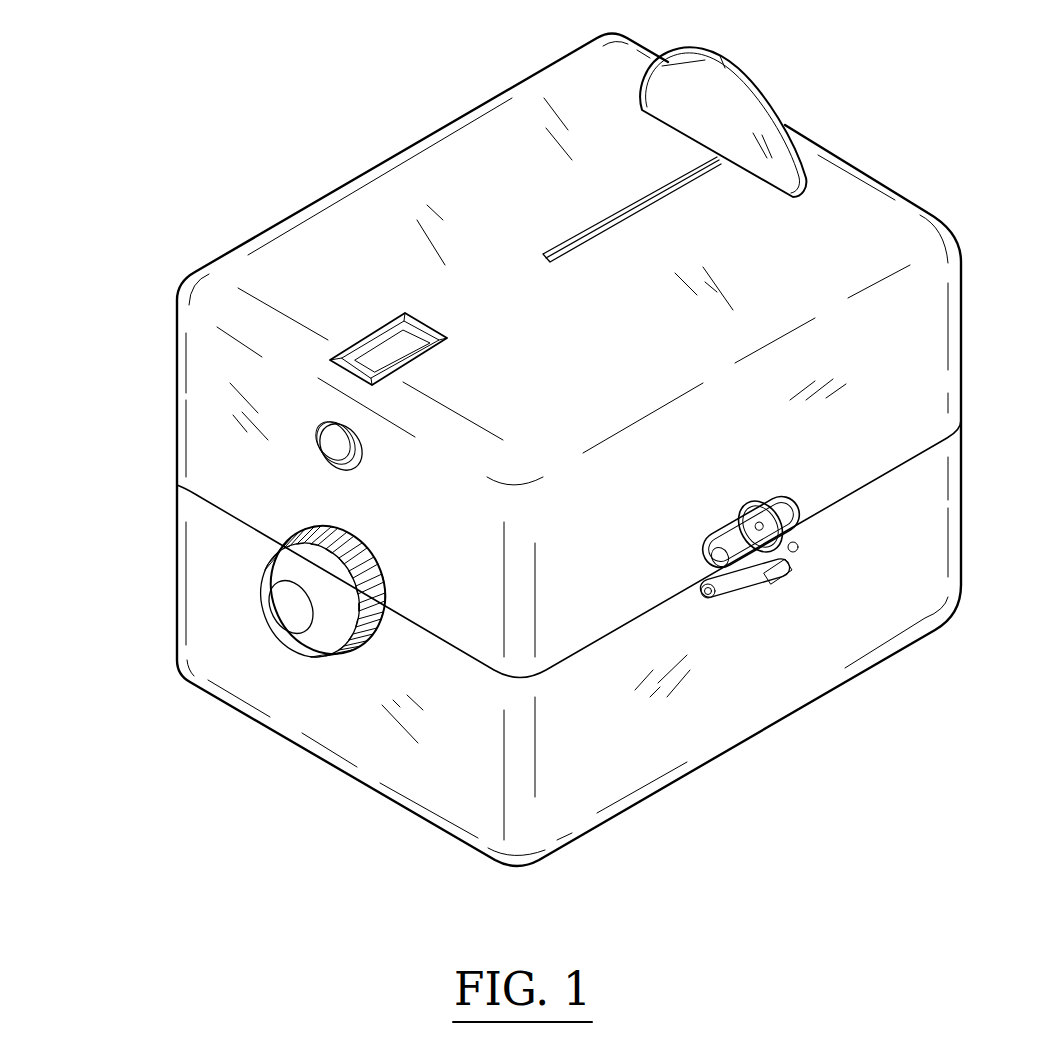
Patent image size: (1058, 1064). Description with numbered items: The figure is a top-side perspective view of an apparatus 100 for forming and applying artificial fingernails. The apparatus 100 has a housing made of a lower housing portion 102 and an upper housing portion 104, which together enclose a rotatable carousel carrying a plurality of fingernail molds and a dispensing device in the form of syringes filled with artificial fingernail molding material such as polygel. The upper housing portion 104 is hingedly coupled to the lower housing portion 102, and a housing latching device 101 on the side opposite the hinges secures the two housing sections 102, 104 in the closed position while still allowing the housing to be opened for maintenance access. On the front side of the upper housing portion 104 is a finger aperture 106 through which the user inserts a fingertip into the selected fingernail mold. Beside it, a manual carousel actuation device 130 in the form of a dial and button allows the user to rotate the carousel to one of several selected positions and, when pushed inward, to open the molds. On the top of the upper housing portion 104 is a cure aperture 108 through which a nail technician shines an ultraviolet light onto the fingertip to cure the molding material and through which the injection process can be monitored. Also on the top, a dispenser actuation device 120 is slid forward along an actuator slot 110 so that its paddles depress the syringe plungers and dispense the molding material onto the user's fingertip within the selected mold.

The apparatus for forming and applying artificial fingernails 100 is at (210, 815).
The housing latching device 101 is at (803, 540).
The lower housing portion 102 is at (177, 613).
The upper housing portion 104 is at (178, 386).
The finger aperture 106 is at (318, 436).
The cure aperture 108 is at (396, 326).
The actuator slot 110 is at (603, 214).
The dispenser actuation device 120 is at (769, 100).
The manual carousel actuation device 130 is at (300, 645).